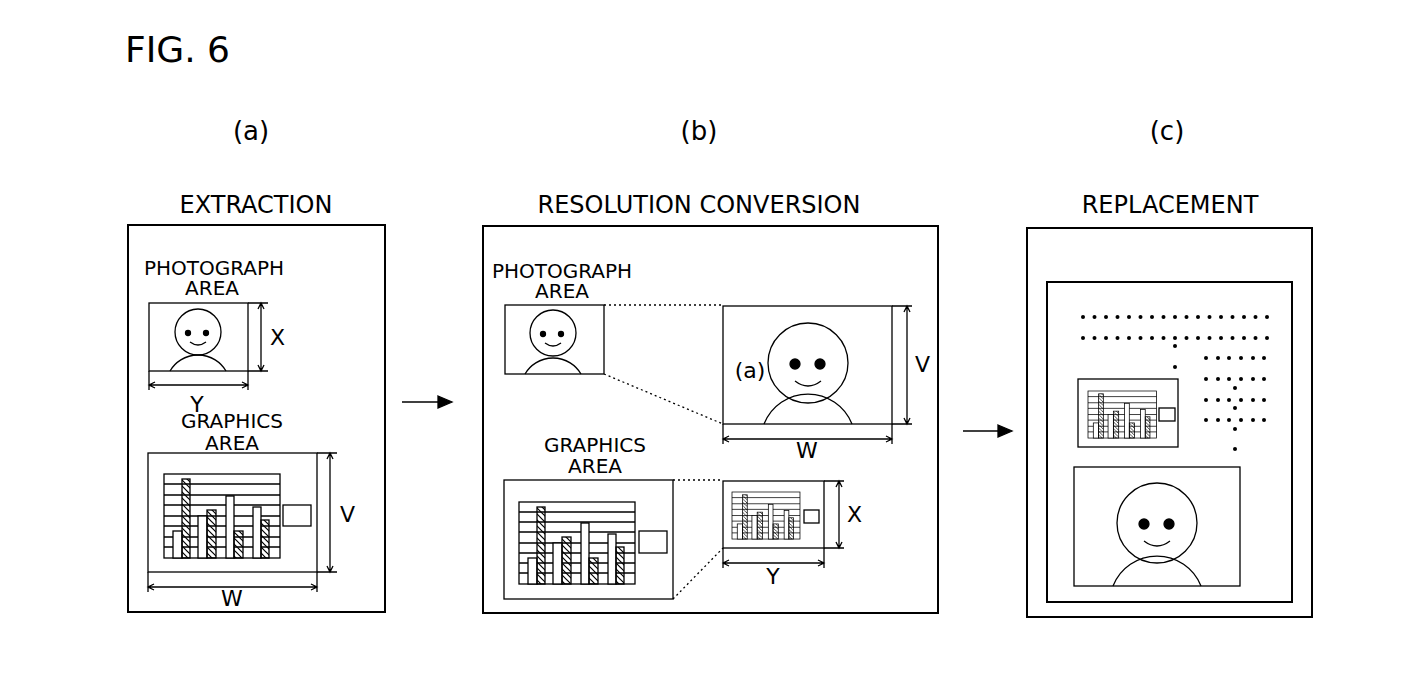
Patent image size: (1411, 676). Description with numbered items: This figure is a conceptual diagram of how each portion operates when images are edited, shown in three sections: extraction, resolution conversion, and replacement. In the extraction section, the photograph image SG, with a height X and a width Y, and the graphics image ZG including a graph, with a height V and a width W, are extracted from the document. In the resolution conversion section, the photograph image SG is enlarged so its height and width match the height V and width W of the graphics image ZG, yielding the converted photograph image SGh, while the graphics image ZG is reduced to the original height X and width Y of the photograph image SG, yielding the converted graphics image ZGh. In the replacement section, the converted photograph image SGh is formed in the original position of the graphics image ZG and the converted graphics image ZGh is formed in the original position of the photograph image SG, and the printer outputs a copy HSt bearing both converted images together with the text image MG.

The photograph image SG is at (152, 327).
The graphics image ZG is at (155, 497).
The converted photograph image SGh is at (861, 322).
The converted graphics image ZGh is at (812, 497).
The copy HSt is at (1227, 280).
The text image MG is at (1272, 344).